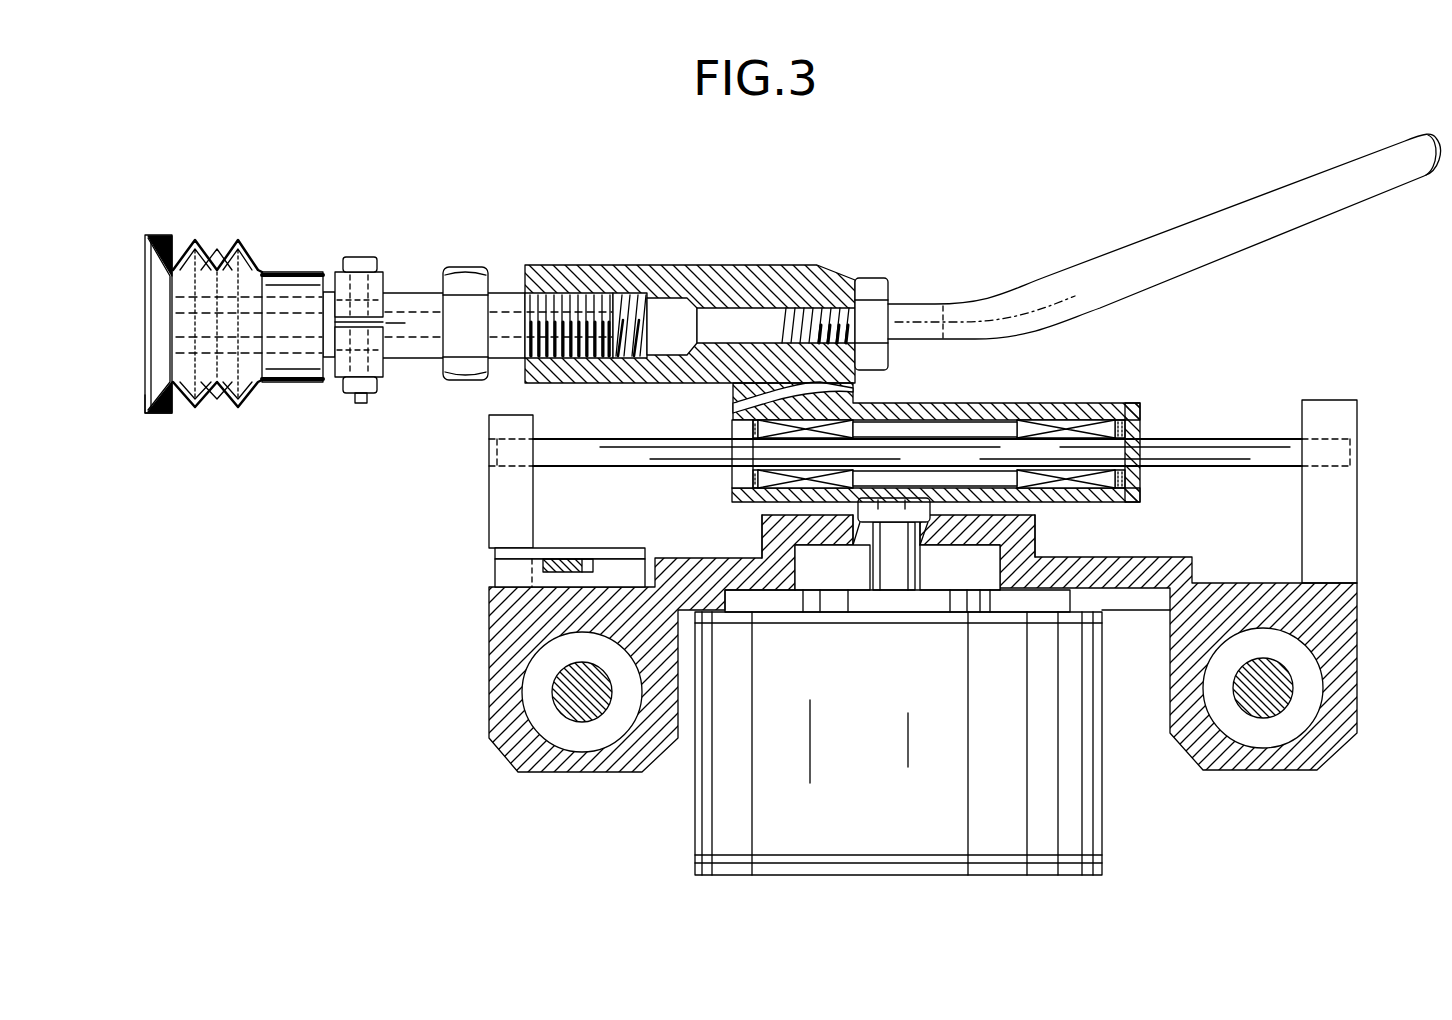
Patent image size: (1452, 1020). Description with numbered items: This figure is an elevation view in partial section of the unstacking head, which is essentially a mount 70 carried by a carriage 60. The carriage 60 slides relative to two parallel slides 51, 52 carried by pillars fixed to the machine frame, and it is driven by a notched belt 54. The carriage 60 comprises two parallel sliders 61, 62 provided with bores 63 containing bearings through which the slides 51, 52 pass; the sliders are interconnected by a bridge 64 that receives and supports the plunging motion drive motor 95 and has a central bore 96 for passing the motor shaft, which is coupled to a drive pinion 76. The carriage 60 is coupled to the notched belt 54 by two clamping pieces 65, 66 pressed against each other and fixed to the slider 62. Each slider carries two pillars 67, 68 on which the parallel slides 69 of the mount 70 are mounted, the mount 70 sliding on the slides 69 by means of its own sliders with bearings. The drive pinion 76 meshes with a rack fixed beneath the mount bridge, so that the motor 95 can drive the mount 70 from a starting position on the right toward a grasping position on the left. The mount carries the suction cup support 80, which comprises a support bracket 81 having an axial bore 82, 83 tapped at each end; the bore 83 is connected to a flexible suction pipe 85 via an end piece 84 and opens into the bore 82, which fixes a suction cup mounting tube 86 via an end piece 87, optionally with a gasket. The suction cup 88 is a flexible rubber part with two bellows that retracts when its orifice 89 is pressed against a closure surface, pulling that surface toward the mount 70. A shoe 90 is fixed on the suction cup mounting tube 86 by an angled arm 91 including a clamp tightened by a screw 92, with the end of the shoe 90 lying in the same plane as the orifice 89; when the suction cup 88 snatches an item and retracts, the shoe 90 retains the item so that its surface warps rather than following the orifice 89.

The slide 51 is at (576, 700).
The slide 52 is at (1252, 703).
The notched belt 54 is at (583, 560).
The carriage 60 is at (911, 613).
The slider 61 is at (1345, 628).
The slider 62 is at (533, 633).
The bore 63 is at (600, 730).
The bridge 64 is at (760, 572).
The clamping piece 65 is at (518, 571).
The clamping piece 66 is at (517, 547).
The pillar 67 is at (515, 428).
The pillar 68 is at (1348, 482).
The slide 69 is at (634, 447).
The mount 70 is at (1000, 402).
The drive pinion 76 is at (893, 508).
The suction cup support 80 is at (690, 281).
The support bracket 81 is at (570, 268).
The bore 82 is at (636, 300).
The bore 83 is at (785, 308).
The end piece 84 is at (880, 278).
The flexible suction pipe 85 is at (963, 312).
The suction cup mounting tube 86 is at (415, 297).
The end piece 87 is at (468, 278).
The suction cup 88 is at (197, 240).
The orifice 89 is at (146, 287).
The shoe 90 is at (166, 413).
The angled arm 91 is at (336, 272).
The screw 92 is at (355, 396).
The plunging motion drive motor 95 is at (1068, 825).
The central bore 96 is at (922, 534).